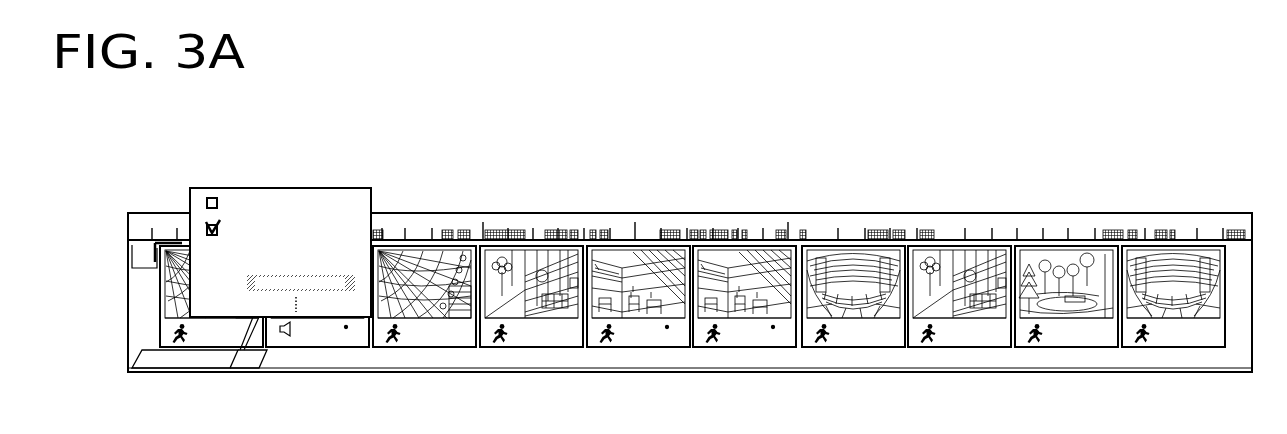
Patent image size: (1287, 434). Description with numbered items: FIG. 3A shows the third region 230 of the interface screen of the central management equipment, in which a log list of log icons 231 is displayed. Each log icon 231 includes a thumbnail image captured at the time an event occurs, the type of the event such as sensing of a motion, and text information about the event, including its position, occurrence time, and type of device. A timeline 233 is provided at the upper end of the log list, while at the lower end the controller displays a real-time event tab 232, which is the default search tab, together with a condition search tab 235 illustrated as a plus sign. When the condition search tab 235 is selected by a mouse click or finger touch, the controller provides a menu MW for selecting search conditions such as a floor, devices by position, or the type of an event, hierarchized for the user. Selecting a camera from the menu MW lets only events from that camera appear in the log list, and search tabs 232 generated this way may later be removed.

The third region 230 is at (865, 182).
The log icon 231 is at (155, 268).
The real-time event tab 232 is at (157, 370).
The timeline 233 is at (135, 232).
The condition search tab 235 is at (245, 370).
The menu MW is at (338, 188).